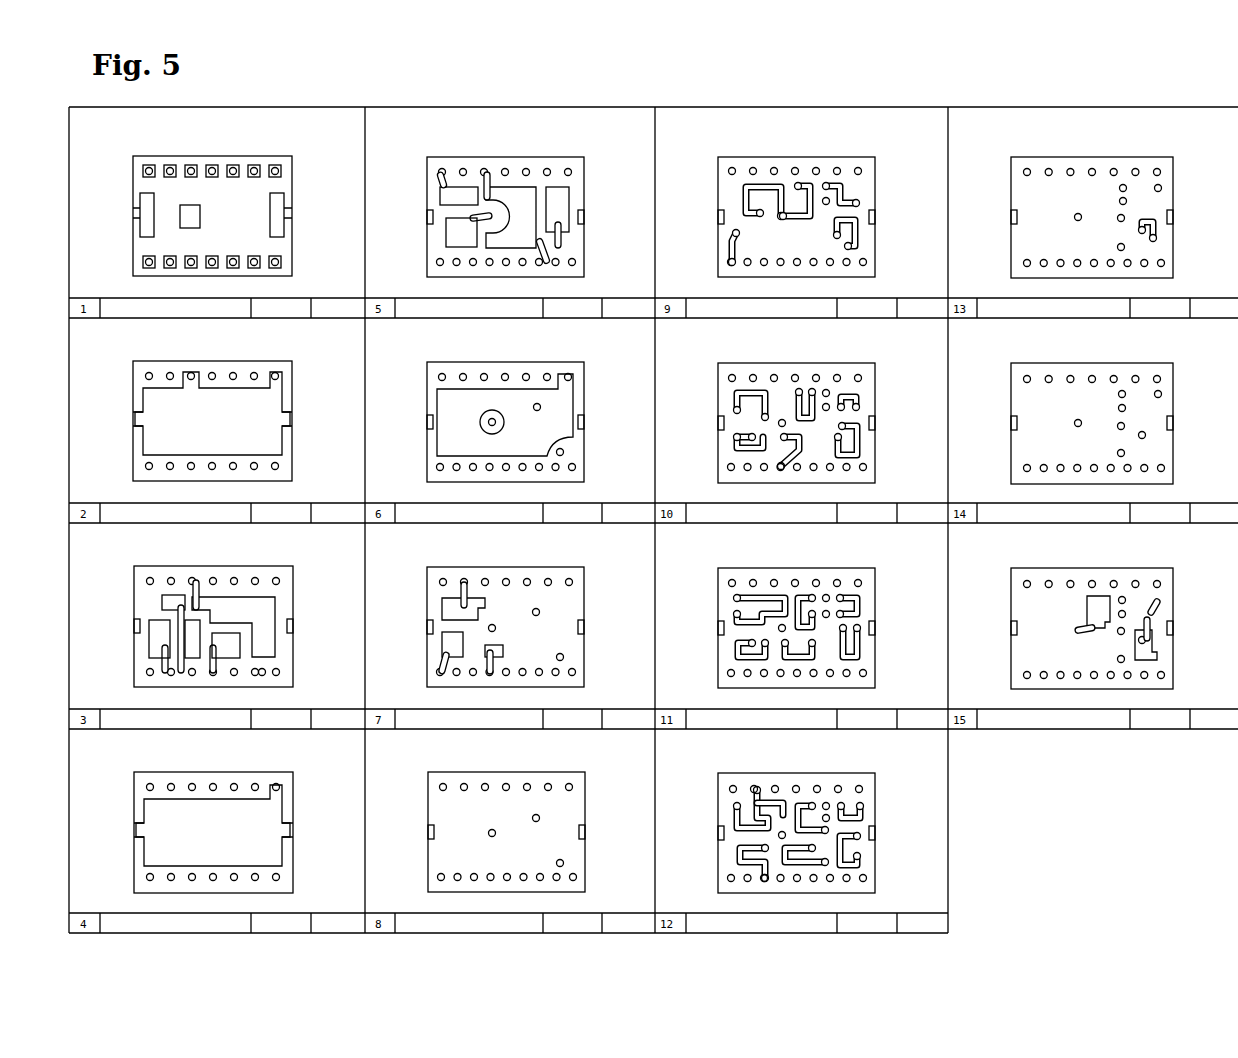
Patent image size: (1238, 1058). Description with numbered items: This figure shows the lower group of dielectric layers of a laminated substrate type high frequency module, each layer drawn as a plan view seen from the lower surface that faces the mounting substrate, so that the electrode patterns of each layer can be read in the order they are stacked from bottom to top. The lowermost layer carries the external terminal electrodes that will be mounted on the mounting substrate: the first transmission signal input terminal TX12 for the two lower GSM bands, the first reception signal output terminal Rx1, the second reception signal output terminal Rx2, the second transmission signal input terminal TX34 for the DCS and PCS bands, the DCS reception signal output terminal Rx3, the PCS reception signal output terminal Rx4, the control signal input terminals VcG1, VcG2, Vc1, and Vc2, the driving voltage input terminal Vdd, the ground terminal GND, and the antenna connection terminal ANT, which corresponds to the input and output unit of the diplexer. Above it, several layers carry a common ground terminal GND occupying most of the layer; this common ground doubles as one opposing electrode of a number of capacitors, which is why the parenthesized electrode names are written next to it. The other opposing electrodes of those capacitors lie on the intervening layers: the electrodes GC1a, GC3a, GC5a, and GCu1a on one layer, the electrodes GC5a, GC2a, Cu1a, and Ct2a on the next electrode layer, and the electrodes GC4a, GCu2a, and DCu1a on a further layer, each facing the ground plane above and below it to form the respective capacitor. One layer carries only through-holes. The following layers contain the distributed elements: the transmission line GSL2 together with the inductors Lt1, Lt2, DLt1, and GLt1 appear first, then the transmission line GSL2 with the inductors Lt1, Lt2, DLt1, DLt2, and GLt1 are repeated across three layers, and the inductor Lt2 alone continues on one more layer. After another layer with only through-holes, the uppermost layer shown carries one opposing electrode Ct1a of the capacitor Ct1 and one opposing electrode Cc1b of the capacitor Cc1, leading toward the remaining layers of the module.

The GSM850 reception signal output terminal Rx1 is at (150, 165).
The GSM900 reception signal output terminal Rx2 is at (170, 165).
The DCS reception signal output terminal Rx3 is at (212, 165).
The PCS reception signal output terminal Rx4 is at (233, 165).
The control signal input terminal Vc2 is at (254, 165).
The control signal input terminal Vc1 is at (256, 268).
The ground terminal GND is at (191, 165).
The GSM850/900 transmission signal input terminal TX12 is at (143, 263).
The DCS/PCS transmission signal input terminal TX34 is at (191, 268).
The control signal input terminal VcG2 is at (170, 268).
The control signal input terminal VcG1 is at (212, 268).
The driving voltage input terminal Vdd is at (233, 268).
The antenna connection terminal ANT is at (281, 262).
The opposing electrode of capacitor GC2 GC2a is at (458, 186).
The opposing electrode of capacitor GC5 GC5a is at (509, 190).
The opposing electrode of capacitor Ct2 Ct2a is at (567, 195).
The opposing electrode of capacitor Cu1 Cu1a is at (450, 231).
The transmission line GSL2 is at (761, 186).
The inductor Lt1 is at (803, 186).
The inductor DLt1 is at (845, 197).
The inductor GLt1 is at (730, 237).
The inductor Lt2 is at (858, 237).
The inductor DLt2 is at (790, 455).
The opposing electrode of capacitor GC3 GC3a is at (150, 645).
The opposing electrode of capacitor GCu1 GCu1a is at (194, 655).
The opposing electrode of capacitor GC1 GC1a is at (236, 655).
The opposing electrode of capacitor GC4 GC4a is at (445, 600).
The opposing electrode of capacitor GCu2 GCu2a is at (442, 643).
The opposing electrode of capacitor DCu1 DCu1a is at (505, 650).
The opposing electrode of capacitor Ct1 Ct1a is at (1100, 603).
The opposing electrode of capacitor Cc1 Cc1b is at (1160, 656).